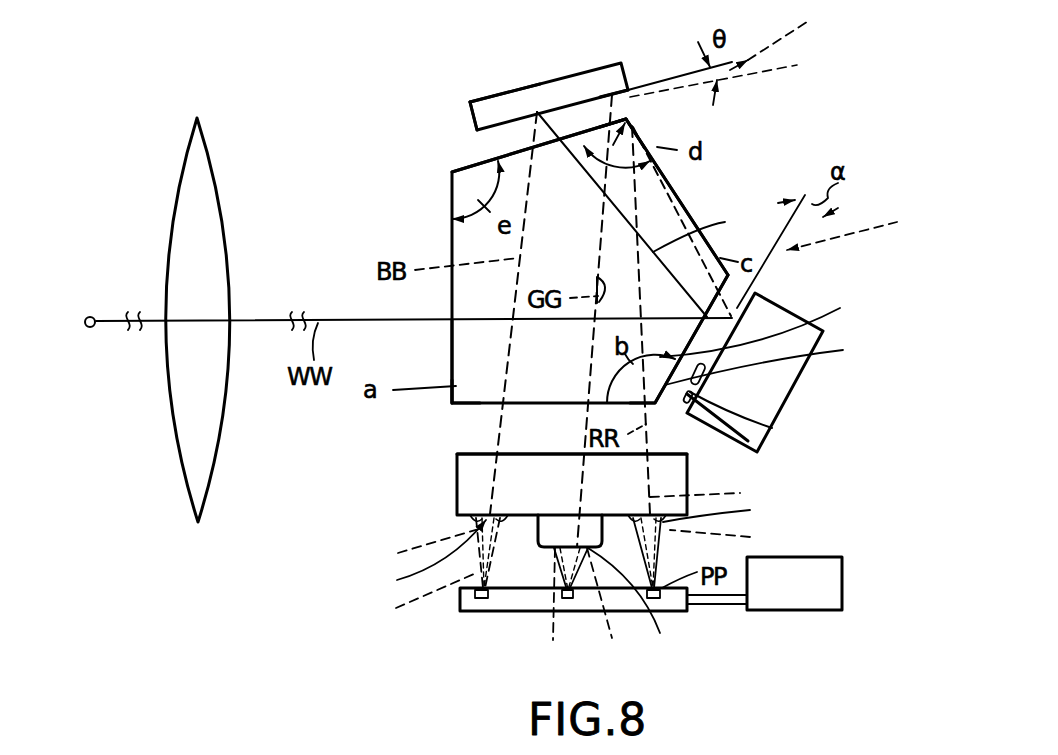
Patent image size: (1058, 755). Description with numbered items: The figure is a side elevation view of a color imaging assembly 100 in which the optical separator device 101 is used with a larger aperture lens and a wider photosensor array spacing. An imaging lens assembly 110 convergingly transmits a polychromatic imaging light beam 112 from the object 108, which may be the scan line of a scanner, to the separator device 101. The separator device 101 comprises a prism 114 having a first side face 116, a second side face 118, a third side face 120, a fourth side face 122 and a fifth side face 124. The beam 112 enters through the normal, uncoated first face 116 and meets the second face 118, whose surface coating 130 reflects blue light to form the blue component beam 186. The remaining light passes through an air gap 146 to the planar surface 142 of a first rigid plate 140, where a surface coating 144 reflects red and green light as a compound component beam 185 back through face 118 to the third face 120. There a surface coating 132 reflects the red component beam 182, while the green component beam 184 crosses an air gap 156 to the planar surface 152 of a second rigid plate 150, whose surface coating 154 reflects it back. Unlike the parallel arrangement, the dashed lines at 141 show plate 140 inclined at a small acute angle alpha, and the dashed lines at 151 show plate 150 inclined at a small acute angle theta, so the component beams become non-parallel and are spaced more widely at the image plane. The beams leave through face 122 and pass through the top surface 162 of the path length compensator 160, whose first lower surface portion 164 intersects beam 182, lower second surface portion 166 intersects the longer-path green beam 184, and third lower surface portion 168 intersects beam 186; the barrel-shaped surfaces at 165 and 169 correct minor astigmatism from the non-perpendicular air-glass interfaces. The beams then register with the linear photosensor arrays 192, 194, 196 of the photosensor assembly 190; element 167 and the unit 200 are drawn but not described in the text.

The color imaging assembly 100 is at (295, 228).
The optical separator device 101 is at (418, 181).
The object 108 is at (92, 328).
The imaging lens assembly 110 is at (170, 220).
The polychromatic imaging light beam 112 is at (352, 313).
The prism 114 is at (492, 252).
The first side face 116 is at (452, 347).
The second side face 118 is at (662, 388).
The third side face 120 is at (622, 120).
The fourth side face 122 is at (458, 405).
The fifth side face 124 is at (698, 203).
The surface coating 130 is at (768, 348).
The surface coating 132 is at (455, 170).
The first rigid plate 140 is at (797, 403).
The inclined position of plate 140 141 is at (863, 226).
The planar surface 142 is at (774, 361).
The surface coating 144 is at (773, 426).
The air gap 146 is at (738, 287).
The second rigid plate 150 is at (543, 78).
The inclined position of plate 150 151 is at (792, 39).
The planar surface 152 is at (487, 133).
The surface coating 154 is at (497, 120).
The air gap 156 is at (622, 108).
The path length compensator 160 is at (432, 503).
The top surface 162 is at (468, 455).
The first lower surface portion 164 is at (727, 517).
The barrel shaped surface 165 is at (732, 542).
The second lower surface portion 166 is at (641, 607).
The light ray 167 is at (533, 608).
The third lower surface portion 168 is at (414, 564).
The barrel shaped surface 169 is at (413, 553).
The red component beam 182 is at (718, 492).
The green component beam 184 is at (678, 438).
The compound component beam 185 is at (677, 173).
The blue component beam 186 is at (408, 607).
The photosensor assembly 190 is at (515, 614).
The linear photosensor array 192 is at (660, 608).
The linear photosensor array 194 is at (568, 600).
The linear photosensor array 196 is at (476, 596).
The control unit 200 is at (825, 572).